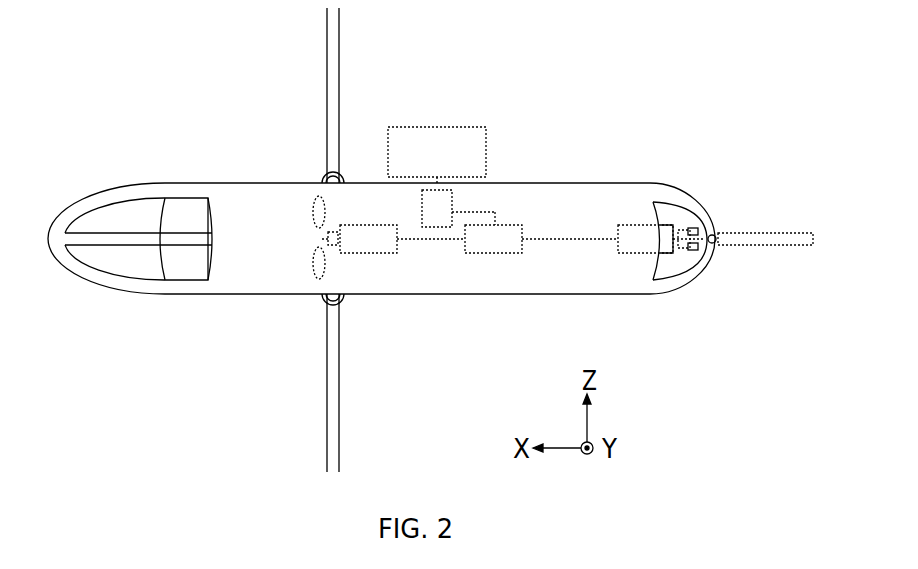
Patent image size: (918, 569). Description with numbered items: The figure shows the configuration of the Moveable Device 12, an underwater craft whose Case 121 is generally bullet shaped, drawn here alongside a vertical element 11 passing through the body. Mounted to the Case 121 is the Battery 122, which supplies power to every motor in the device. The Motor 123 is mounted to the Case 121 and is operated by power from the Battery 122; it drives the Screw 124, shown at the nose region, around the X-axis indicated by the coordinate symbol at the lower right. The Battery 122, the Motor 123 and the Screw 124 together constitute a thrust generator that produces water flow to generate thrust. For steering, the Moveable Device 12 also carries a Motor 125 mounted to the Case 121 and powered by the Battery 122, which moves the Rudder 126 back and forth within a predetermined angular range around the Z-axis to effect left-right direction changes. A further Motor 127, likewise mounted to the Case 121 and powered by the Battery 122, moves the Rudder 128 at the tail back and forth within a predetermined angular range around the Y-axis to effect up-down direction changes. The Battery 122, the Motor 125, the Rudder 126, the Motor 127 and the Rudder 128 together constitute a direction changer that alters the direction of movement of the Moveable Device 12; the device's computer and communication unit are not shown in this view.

The pole 11 is at (336, 24).
The moveable device 12 is at (602, 76).
The case 121 is at (250, 190).
The battery 122 is at (510, 233).
The motor 123 is at (370, 248).
The screw 124 is at (318, 230).
The motor 125 is at (435, 207).
The rudder 126 is at (453, 137).
The motor 127 is at (628, 232).
The rudder 128 is at (767, 238).